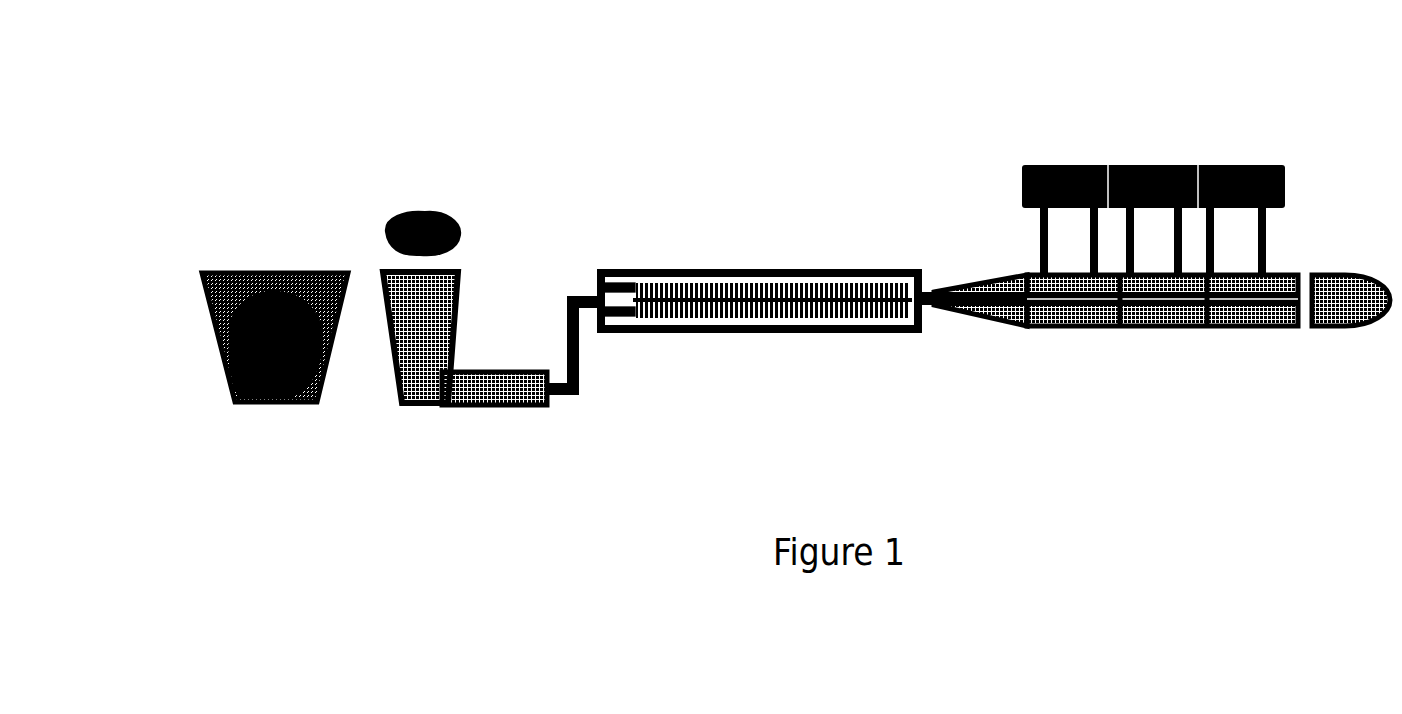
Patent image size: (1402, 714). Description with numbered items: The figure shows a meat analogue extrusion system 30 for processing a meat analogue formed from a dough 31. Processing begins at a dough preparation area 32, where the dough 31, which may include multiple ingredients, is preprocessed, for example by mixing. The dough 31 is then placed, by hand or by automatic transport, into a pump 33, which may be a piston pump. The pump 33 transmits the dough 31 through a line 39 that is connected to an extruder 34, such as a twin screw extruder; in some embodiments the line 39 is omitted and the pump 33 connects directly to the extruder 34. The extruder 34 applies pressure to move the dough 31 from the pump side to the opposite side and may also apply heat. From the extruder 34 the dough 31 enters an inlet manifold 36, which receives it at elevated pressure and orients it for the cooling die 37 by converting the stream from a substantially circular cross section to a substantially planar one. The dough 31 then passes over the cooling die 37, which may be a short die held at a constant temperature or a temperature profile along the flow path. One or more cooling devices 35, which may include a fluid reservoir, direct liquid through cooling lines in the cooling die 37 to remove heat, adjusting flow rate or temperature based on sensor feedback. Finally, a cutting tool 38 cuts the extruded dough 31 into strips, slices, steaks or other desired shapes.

The meat analogue extrusion system 30 is at (439, 72).
The dough 31 is at (270, 357).
The dough preparation area 32 is at (233, 242).
The pump 33 is at (455, 448).
The extruder 34 is at (721, 251).
The cooling devices 35 is at (1008, 162).
The inlet manifold 36 is at (967, 349).
The cooling die 37 is at (1132, 373).
The cutting tool 38 is at (1353, 351).
The line 39 is at (585, 418).